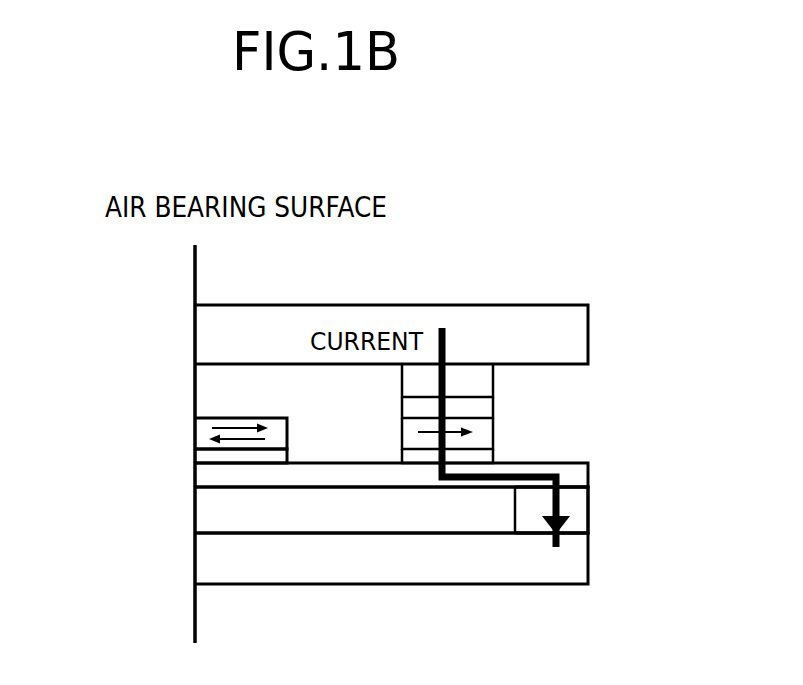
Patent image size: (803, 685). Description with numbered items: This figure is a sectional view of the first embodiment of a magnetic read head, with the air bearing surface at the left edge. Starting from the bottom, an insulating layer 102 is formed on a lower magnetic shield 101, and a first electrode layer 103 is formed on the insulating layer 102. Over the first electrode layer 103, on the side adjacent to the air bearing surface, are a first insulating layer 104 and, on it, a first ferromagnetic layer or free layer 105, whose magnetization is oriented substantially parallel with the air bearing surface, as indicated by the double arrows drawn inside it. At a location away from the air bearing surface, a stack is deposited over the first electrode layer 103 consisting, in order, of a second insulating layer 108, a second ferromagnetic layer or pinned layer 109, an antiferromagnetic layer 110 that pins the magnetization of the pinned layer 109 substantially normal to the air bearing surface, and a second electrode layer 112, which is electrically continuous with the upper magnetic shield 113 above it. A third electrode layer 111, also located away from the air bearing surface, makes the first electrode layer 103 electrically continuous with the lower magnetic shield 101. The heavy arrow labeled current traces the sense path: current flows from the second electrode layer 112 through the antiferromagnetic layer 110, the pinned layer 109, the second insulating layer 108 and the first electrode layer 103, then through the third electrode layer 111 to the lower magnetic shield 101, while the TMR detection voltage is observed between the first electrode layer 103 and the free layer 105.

The lower magnetic shield 101 is at (362, 562).
The insulating layer 102 is at (417, 518).
The first electrode layer 103 is at (208, 475).
The first insulating layer 104 is at (208, 460).
The first ferromagnetic layer (free layer) 105 is at (208, 435).
The second insulating layer 108 is at (468, 457).
The second ferromagnetic layer (pinned layer) 109 is at (483, 435).
The antiferromagnetic layer 110 is at (470, 408).
The third electrode layer 111 is at (567, 502).
The second electrode layer 112 is at (410, 375).
The upper magnetic shield 113 is at (520, 328).